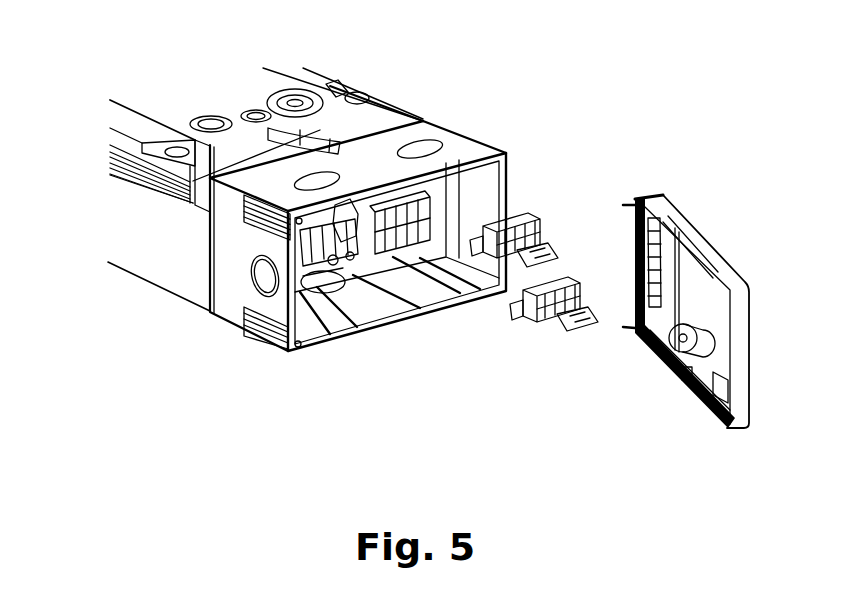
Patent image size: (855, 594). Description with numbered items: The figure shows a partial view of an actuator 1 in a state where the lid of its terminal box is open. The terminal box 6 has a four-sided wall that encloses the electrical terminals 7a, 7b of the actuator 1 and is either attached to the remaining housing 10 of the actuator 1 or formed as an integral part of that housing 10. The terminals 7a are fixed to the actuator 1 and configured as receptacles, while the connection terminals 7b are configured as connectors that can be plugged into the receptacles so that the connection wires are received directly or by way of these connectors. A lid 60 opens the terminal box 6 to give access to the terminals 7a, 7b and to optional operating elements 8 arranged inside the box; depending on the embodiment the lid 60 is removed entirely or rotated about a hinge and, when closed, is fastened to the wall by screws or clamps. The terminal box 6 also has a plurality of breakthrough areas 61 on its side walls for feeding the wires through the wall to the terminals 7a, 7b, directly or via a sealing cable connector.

The actuator 1 is at (130, 308).
The terminal box 6 is at (423, 120).
The electrical terminals 7a is at (318, 275).
The connection terminals 7b is at (533, 193).
The operating elements 8 is at (350, 267).
The housing 10 is at (122, 218).
The lid 60 is at (700, 228).
The breakthrough areas 61 is at (430, 144).